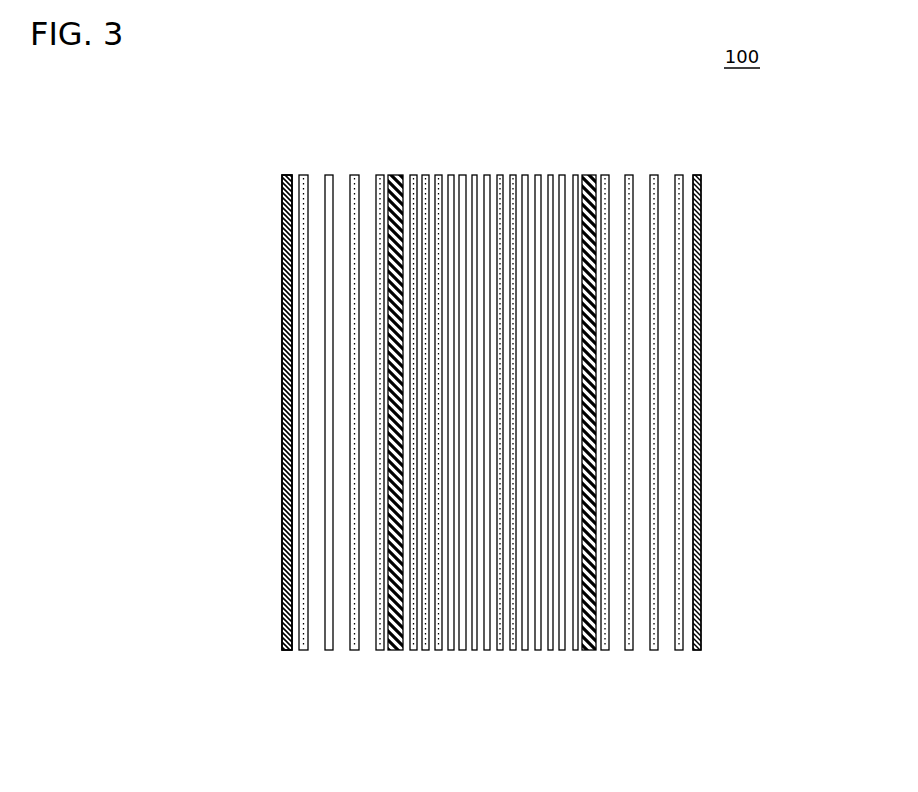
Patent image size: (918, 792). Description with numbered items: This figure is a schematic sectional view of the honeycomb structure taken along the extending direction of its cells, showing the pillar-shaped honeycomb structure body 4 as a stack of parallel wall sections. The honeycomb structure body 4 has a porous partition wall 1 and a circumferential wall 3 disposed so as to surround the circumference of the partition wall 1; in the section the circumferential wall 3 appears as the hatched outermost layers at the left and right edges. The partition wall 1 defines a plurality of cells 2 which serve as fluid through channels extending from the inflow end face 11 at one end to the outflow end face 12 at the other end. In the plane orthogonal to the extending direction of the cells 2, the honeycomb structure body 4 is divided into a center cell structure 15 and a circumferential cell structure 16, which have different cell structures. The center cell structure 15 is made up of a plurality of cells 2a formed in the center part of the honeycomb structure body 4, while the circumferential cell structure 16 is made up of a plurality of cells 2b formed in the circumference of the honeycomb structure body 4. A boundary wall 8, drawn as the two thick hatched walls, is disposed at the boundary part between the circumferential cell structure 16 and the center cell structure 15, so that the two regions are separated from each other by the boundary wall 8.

The partition wall 1 is at (550, 193).
The cells 2 is at (440, 378).
The cells of center cell structure 2a is at (457, 193).
The cells of circumferential cell structure 2b is at (369, 193).
The circumferential wall 3 is at (283, 360).
The honeycomb structure body 4 is at (707, 270).
The boundary wall 8 is at (390, 500).
The inflow end face 11 is at (288, 160).
The outflow end face 12 is at (285, 675).
The center cell structure 15 is at (407, 662).
The circumferential cell structure 16 is at (387, 662).